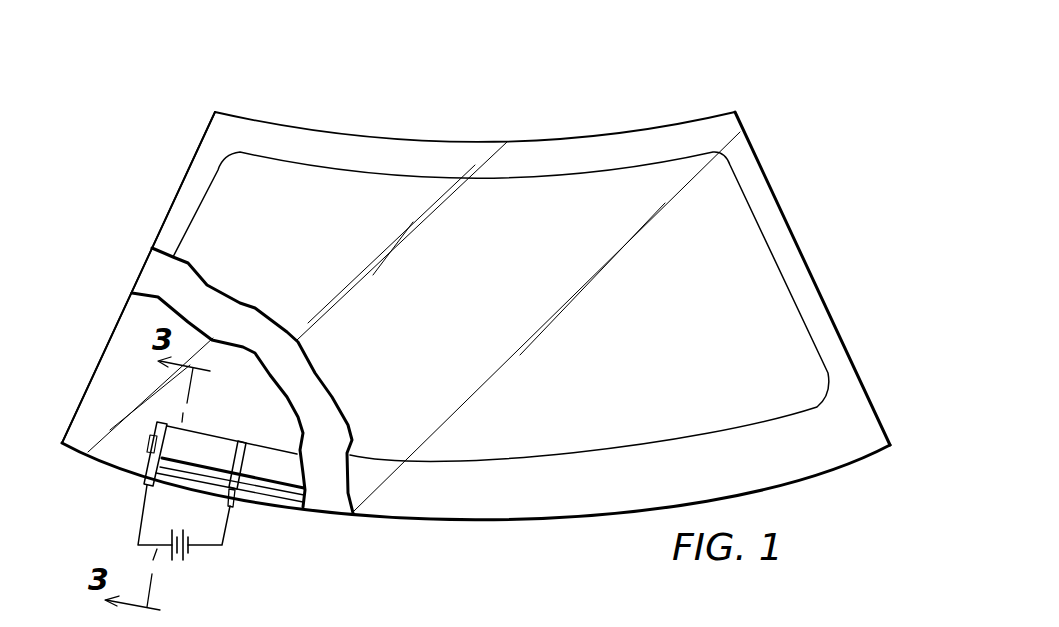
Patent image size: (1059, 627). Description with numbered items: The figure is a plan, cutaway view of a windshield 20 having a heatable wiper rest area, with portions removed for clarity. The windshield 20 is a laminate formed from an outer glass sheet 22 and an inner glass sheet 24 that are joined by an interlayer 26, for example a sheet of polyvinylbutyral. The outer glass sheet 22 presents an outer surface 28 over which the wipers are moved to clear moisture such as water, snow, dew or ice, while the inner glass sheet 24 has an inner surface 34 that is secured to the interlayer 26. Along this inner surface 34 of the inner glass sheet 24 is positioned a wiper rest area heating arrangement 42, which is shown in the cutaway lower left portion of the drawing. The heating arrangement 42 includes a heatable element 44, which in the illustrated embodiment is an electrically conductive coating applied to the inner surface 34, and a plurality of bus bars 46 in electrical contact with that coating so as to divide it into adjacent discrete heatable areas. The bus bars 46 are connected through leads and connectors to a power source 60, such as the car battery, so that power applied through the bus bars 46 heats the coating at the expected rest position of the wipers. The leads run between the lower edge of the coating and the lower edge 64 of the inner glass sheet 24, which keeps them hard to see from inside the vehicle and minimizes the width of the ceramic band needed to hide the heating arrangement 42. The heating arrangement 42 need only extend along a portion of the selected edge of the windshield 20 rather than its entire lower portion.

The windshield 20 is at (658, 91).
The outer glass sheet 22 is at (183, 177).
The inner glass sheet 24 is at (88, 377).
The interlayer 26 is at (150, 263).
The outer surface 28 is at (335, 186).
The inner surface 34 is at (131, 315).
The wiper rest area heating arrangement 42 is at (171, 472).
The heatable element 44 is at (270, 460).
The bus bars 46 is at (232, 460).
The power source 60 is at (168, 537).
The lower edge 64 is at (250, 503).